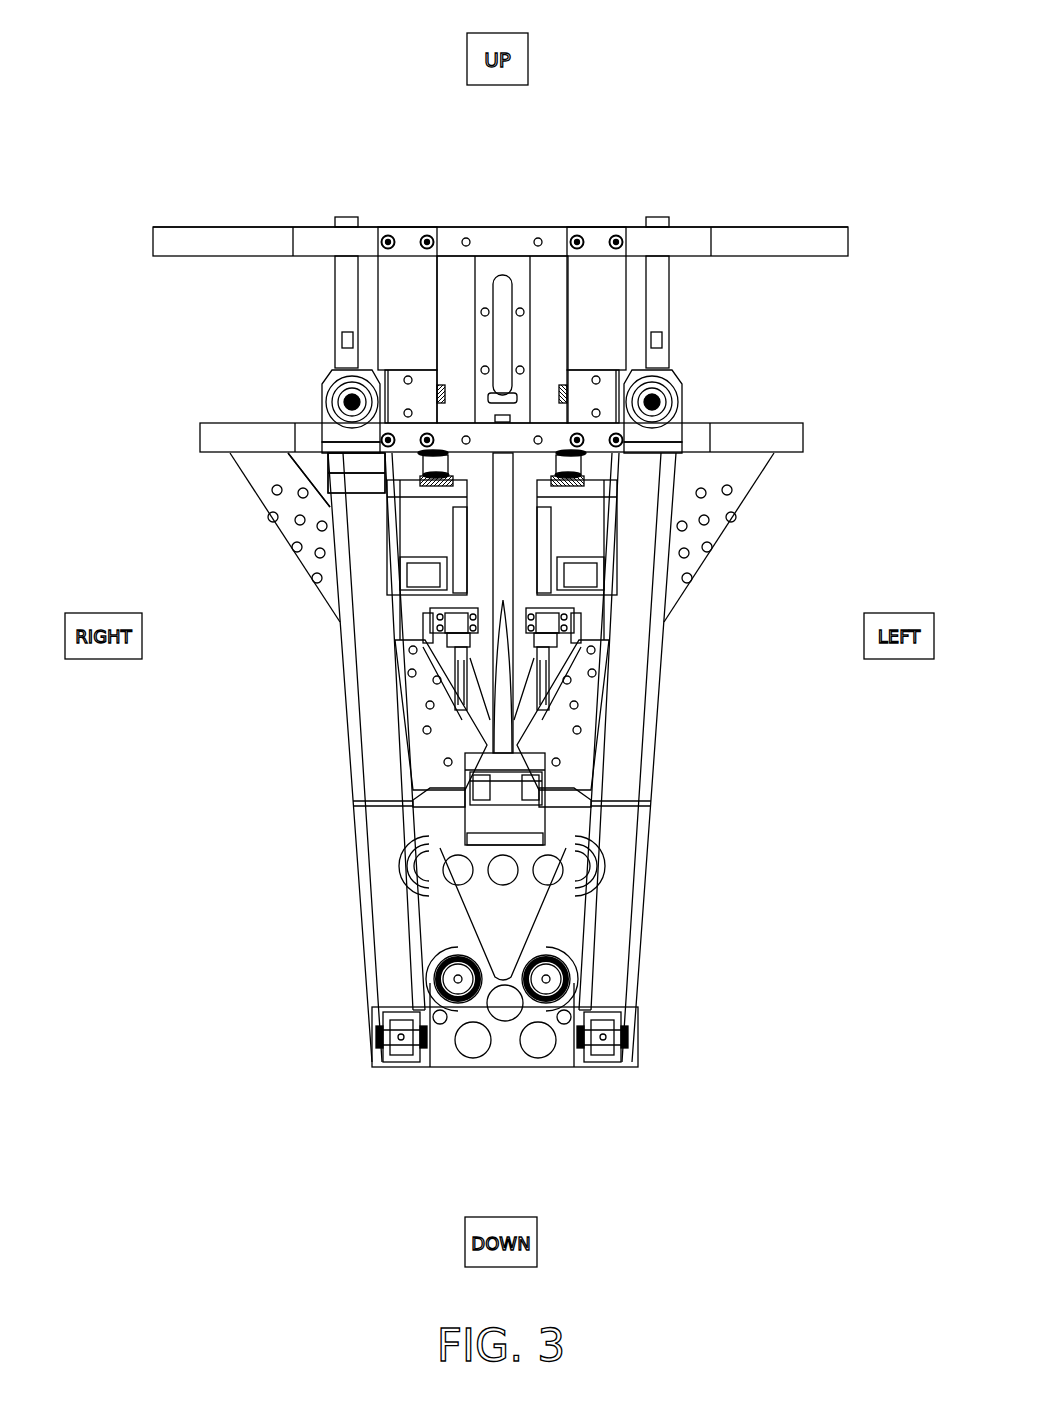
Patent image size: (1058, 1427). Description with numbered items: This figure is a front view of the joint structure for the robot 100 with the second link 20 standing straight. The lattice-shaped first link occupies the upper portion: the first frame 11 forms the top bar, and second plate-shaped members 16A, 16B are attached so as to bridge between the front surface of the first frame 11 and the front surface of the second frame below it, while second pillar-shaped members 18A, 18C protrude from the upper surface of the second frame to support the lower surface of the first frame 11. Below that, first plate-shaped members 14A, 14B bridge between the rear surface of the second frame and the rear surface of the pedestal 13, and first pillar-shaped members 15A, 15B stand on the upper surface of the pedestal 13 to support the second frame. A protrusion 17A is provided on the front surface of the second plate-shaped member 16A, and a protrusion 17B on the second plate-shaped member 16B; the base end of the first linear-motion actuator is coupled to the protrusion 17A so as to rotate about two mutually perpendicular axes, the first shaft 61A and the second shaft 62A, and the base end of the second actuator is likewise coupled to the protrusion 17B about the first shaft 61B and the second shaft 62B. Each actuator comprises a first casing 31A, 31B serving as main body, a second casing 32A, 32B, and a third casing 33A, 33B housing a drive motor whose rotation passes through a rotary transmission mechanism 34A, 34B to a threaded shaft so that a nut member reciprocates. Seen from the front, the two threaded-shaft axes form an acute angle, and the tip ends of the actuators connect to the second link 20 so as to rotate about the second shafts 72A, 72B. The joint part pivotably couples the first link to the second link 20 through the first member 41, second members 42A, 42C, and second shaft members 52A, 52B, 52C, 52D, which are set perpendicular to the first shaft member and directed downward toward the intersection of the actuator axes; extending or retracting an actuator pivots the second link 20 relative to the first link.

The joint structure for the robot 100 is at (487, 25).
The first frame 11 is at (205, 240).
The second plate-shaped member 16A is at (404, 240).
The second plate-shaped member 16B is at (598, 238).
The second shaft 62A is at (443, 385).
The second shaft 62B is at (560, 385).
The second pillar-shaped member 18A is at (343, 300).
The second pillar-shaped member 18C is at (662, 299).
The protrusion 17A is at (403, 383).
The protrusion 17B is at (617, 383).
The first shaft 61A is at (352, 402).
The first shaft 61B is at (672, 403).
The rotary transmission mechanism 34A is at (270, 463).
The rotary transmission mechanism 34B is at (777, 467).
The first plate-shaped member 14A is at (273, 500).
The first plate-shaped member 14B is at (738, 502).
The third casing 33A is at (430, 535).
The third casing 33B is at (574, 535).
The first casing 31A is at (357, 574).
The first casing 31B is at (645, 578).
The first pillar-shaped member 15A is at (473, 732).
The first pillar-shaped member 15B is at (532, 732).
The pedestal 13 is at (500, 813).
The first member 41 is at (440, 835).
The second shaft member 52A is at (420, 864).
The second shaft member 52B is at (430, 978).
The second shaft member 52C is at (590, 866).
The second shaft member 52D is at (592, 980).
The second casing 32A is at (387, 895).
The second casing 32B is at (622, 898).
The second member 42A is at (437, 926).
The second member 42C is at (573, 926).
The second shaft 72A is at (372, 1034).
The second shaft 72B is at (577, 1036).
The second link 20 is at (513, 1068).